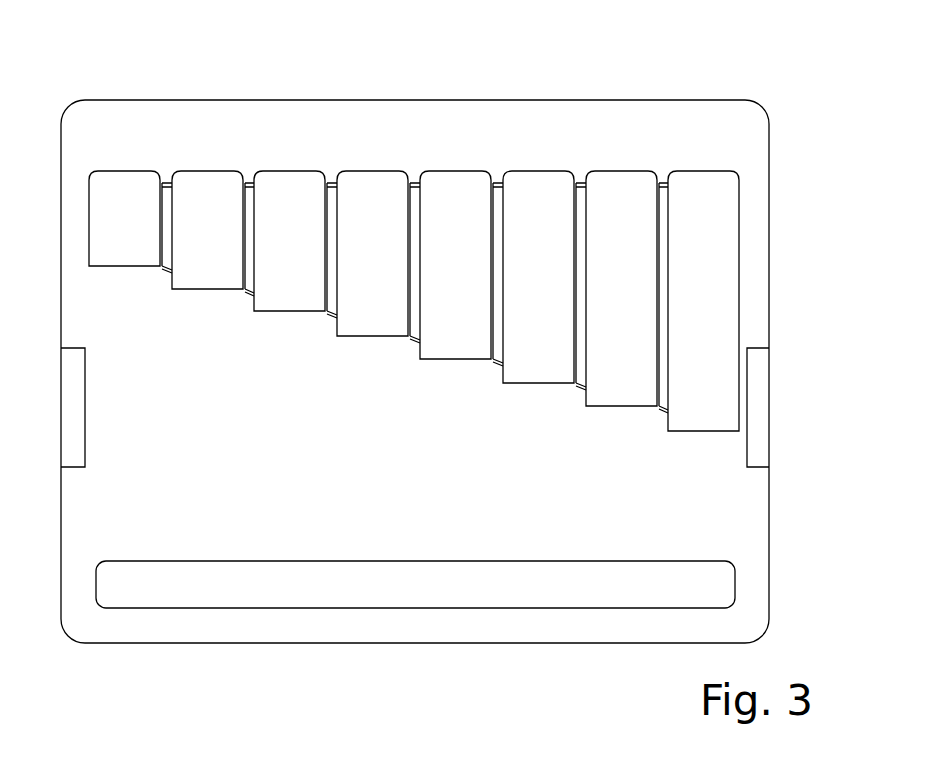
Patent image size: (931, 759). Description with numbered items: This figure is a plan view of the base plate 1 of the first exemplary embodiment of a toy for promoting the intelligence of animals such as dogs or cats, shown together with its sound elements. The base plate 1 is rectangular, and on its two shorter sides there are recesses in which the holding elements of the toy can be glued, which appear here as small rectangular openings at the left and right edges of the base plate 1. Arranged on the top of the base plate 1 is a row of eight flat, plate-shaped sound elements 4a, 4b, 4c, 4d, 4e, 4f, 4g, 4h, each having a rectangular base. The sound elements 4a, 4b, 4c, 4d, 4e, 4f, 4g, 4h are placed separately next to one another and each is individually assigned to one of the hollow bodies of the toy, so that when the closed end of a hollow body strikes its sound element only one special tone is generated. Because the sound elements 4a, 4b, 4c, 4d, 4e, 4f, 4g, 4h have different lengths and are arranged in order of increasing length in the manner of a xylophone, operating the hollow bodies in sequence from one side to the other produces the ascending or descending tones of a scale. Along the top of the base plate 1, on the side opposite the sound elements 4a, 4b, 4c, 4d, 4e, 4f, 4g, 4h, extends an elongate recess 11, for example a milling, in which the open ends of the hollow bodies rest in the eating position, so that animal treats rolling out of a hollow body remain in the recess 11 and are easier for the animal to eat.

The base plate 1 is at (701, 512).
The recess 11 is at (327, 583).
The sound element 4a is at (130, 187).
The sound element 4b is at (209, 187).
The sound element 4c is at (301, 187).
The sound element 4d is at (387, 187).
The sound element 4e is at (470, 187).
The sound element 4f is at (548, 187).
The sound element 4g is at (627, 187).
The sound element 4h is at (710, 187).